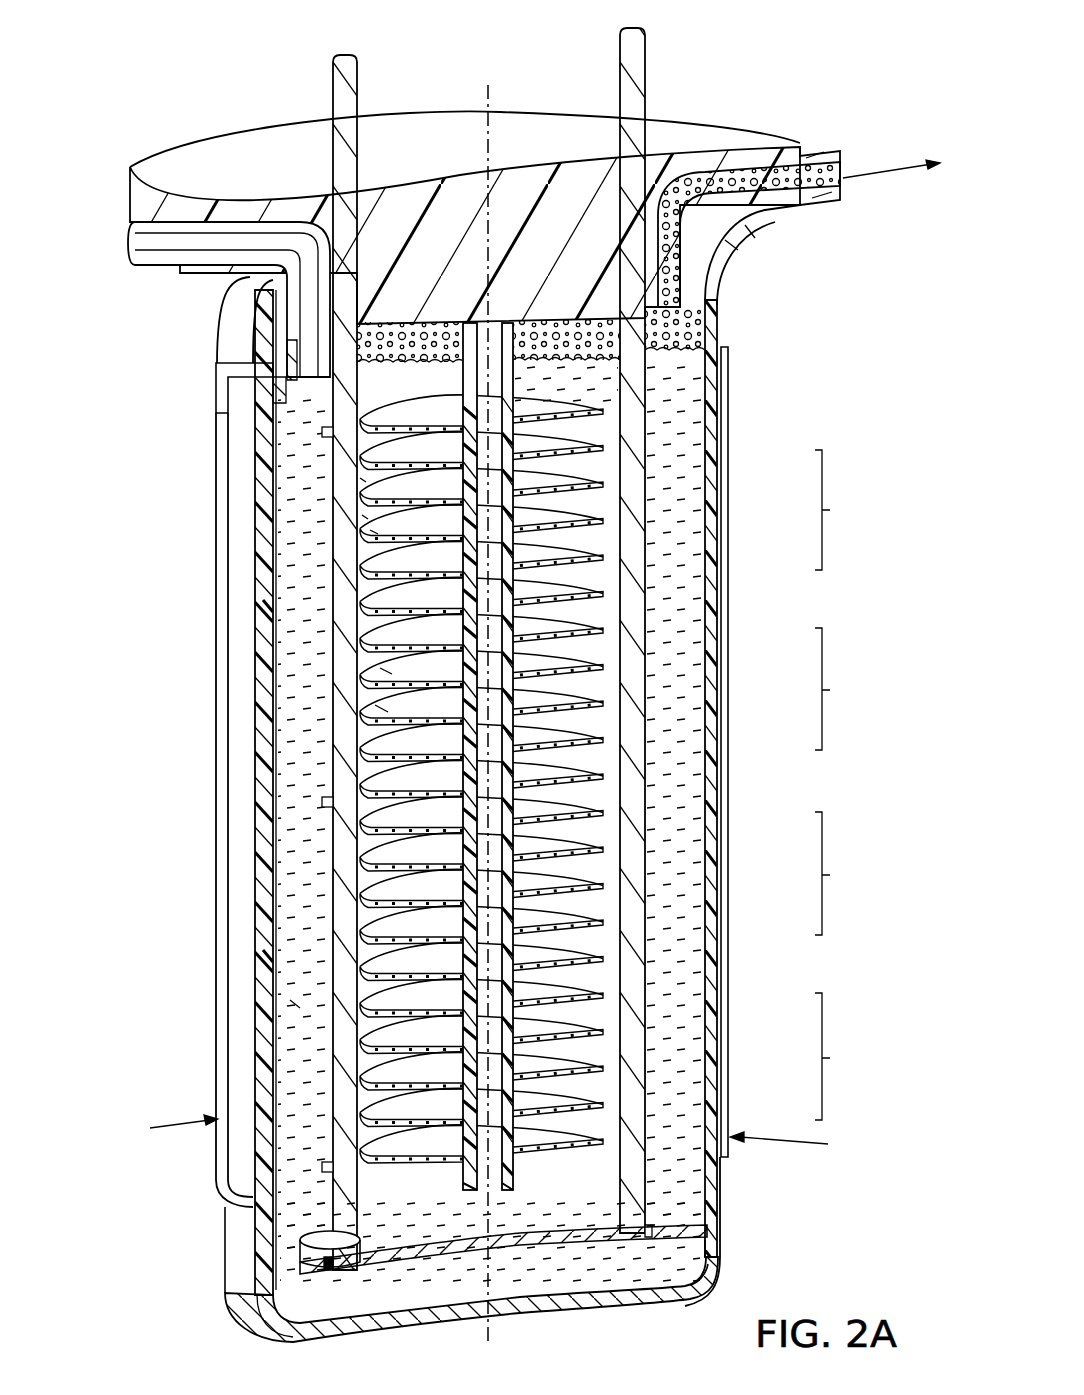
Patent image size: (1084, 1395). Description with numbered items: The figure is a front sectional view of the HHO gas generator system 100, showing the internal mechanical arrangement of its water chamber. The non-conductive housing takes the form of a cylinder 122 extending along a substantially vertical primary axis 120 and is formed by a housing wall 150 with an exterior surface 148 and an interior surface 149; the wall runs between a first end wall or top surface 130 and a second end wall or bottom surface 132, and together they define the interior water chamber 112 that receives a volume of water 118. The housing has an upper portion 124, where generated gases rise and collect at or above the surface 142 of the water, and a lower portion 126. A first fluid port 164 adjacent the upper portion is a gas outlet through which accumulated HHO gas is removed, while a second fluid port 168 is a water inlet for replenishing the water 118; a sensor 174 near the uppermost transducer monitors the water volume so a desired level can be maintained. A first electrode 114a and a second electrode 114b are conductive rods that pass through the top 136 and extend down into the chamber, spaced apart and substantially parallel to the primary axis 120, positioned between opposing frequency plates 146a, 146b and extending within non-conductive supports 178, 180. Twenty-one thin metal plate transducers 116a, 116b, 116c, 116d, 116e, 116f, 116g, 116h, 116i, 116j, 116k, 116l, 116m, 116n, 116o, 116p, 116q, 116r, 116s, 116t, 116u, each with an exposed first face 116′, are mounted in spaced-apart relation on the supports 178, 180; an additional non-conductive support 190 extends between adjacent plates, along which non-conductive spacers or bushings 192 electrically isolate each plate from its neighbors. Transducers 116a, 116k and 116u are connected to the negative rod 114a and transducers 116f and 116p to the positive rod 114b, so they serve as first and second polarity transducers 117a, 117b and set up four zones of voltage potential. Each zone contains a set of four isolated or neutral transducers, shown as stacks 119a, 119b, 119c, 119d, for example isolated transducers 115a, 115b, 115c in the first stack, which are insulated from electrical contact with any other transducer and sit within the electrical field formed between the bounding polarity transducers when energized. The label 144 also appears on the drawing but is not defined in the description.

The hydrogen-oxygen gas generator system 100 is at (124, 74).
The interior water chamber 112 is at (265, 890).
The first electrode 114a is at (332, 68).
The second electrode 114b is at (648, 62).
The isolated transducer 115a is at (358, 479).
The isolated transducer 115b is at (360, 516).
The isolated transducer 115c is at (372, 531).
The transducer 116a is at (580, 405).
The transducer 116b is at (580, 442).
The transducer 116c is at (580, 478).
The transducer 116d is at (580, 515).
The transducer 116e is at (580, 551).
The transducer 116f is at (580, 588).
The transducer 116g is at (580, 624).
The transducer 116h is at (580, 661).
The transducer 116i is at (580, 697).
The transducer 116j is at (580, 734).
The transducer 116k is at (580, 770).
The transducer 116l is at (580, 807).
The transducer 116m is at (580, 843).
The transducer 116n is at (580, 880).
The transducer 116o is at (580, 916).
The transducer 116p is at (580, 953).
The transducer 116q is at (580, 990).
The transducer 116r is at (580, 1026).
The transducer 116s is at (580, 1062).
The transducer 116t is at (580, 1099).
The transducer 116u is at (580, 1135).
The first face 116′ is at (382, 670).
The first polarity transducer 117a is at (320, 432).
The second polarity transducer 117b is at (266, 608).
The volume of water 118 is at (292, 645).
The transducer stack 119a is at (852, 510).
The transducer stack 119b is at (852, 689).
The transducer stack 119c is at (850, 873).
The transducer stack 119d is at (850, 1056).
The primary axis 120 is at (486, 99).
The cylinder 122 is at (716, 1277).
The upper portion 124 is at (262, 356).
The lower portion 126 is at (697, 1226).
The first end wall 130 is at (224, 343).
The second end wall 132 is at (636, 1305).
The top 136 is at (190, 142).
The surface of the water volume 142 is at (700, 348).
The outer housing 144 is at (458, 777).
The frequency plate 146a is at (220, 768).
The frequency plate 146b is at (729, 390).
The exterior surface 148 is at (233, 1223).
The interior surface 149 is at (278, 1285).
The housing wall 150 is at (253, 1283).
The first fluid port 164 is at (842, 156).
The second fluid port 168 is at (128, 253).
The sensor 174 is at (276, 392).
The non-conductive support 178 is at (298, 1005).
The non-conductive support 180 is at (698, 1210).
The non-conductive support 190 is at (516, 1185).
The non-conductive spacer or bushing 192 is at (460, 1182).